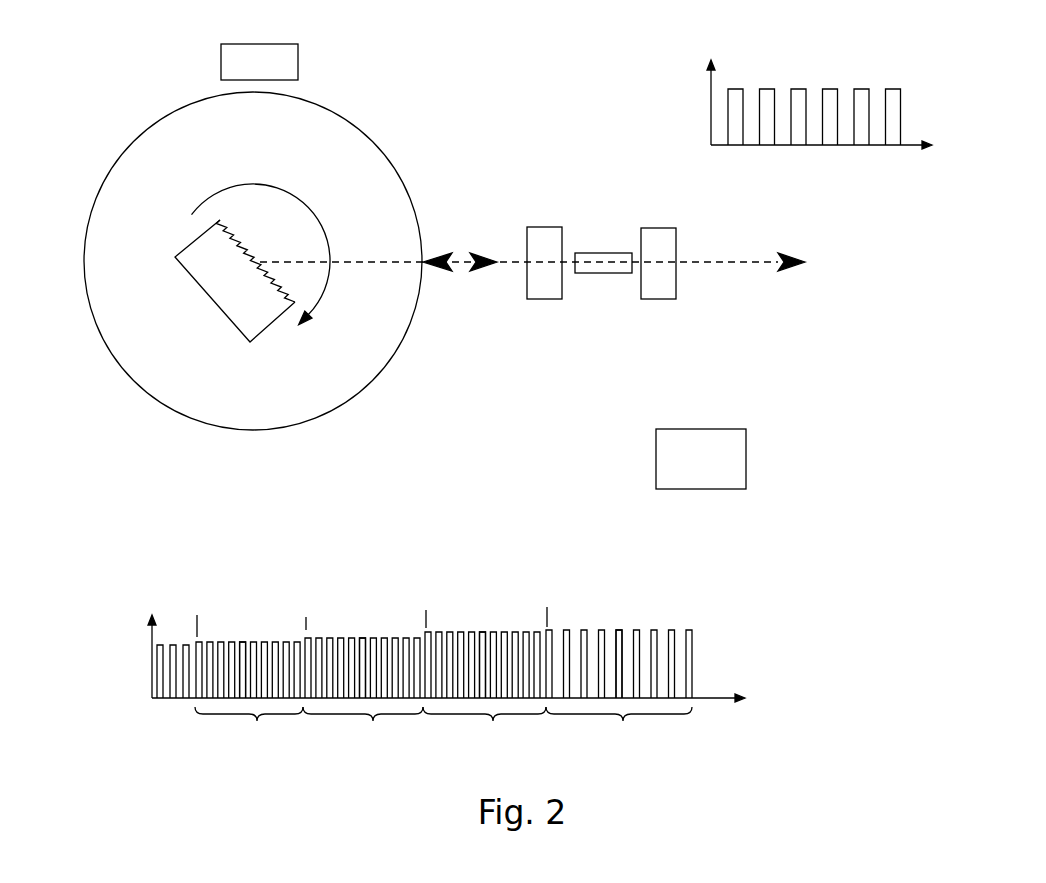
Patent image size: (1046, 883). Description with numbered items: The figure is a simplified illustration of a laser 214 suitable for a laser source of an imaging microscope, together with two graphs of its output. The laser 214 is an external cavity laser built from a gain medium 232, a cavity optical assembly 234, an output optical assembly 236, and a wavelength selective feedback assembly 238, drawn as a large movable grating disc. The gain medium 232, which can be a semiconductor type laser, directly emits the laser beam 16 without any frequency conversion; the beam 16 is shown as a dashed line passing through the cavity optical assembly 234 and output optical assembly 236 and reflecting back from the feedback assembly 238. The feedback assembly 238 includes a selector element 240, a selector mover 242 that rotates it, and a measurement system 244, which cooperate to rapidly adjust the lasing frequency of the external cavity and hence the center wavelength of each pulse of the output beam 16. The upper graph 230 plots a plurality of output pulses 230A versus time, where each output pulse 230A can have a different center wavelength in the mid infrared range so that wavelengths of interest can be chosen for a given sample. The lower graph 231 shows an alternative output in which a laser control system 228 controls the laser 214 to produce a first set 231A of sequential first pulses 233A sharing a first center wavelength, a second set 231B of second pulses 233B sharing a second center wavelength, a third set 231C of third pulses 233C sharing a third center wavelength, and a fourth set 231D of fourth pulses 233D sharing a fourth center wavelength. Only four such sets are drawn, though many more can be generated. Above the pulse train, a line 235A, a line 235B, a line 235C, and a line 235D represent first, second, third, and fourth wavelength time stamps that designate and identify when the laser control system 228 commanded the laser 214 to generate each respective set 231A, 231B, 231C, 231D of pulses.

The laser beam 16 is at (767, 268).
The laser 214 is at (605, 247).
The laser control system 228 is at (701, 459).
The graph 230 is at (806, 88).
The output pulse 230A is at (732, 88).
The graph 231 is at (456, 644).
The first set 231A is at (249, 693).
The second set 231B is at (363, 691).
The third set 231C is at (484, 689).
The fourth set 231D is at (619, 689).
The gain medium 232 is at (603, 273).
The first pulse 233A is at (240, 641).
The second pulse 233B is at (360, 638).
The third pulse 233C is at (479, 632).
The fourth pulse 233D is at (618, 630).
The cavity optical assembly 234 is at (543, 285).
The first wavelength time stamp line 235A is at (197, 616).
The second wavelength time stamp line 235B is at (306, 625).
The third wavelength time stamp line 235C is at (426, 627).
The fourth wavelength time stamp line 235D is at (547, 626).
The output optical assembly 236 is at (655, 288).
The wavelength selective feedback assembly 238 is at (378, 137).
The selector element 240 is at (242, 318).
The selector mover 242 is at (293, 402).
The measurement system 244 is at (259, 62).